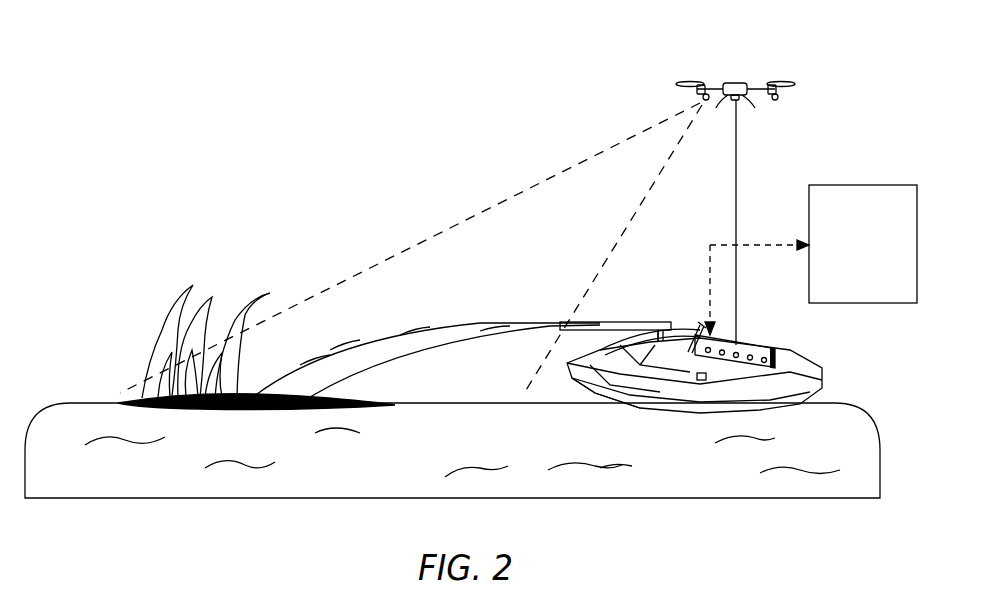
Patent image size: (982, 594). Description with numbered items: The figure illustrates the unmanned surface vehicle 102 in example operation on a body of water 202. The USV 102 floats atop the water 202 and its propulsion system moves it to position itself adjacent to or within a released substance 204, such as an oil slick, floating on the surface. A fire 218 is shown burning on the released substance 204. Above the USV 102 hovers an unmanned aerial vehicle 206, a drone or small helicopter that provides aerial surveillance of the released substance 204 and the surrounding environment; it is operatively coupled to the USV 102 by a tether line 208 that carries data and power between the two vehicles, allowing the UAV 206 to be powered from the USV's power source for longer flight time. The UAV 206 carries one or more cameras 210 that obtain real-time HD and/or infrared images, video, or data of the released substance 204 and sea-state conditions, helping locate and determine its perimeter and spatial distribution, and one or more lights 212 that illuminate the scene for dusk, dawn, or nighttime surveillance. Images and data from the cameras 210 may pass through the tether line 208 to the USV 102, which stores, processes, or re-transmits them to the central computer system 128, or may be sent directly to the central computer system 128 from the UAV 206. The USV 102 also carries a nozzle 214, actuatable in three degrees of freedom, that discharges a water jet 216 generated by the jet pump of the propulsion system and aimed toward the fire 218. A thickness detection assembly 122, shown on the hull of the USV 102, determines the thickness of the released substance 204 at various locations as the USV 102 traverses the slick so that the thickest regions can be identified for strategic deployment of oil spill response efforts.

The unmanned surface vehicle 102 is at (636, 298).
The thickness detection assembly 122 is at (585, 392).
The central computer system 128 is at (846, 297).
The body of water 202 is at (471, 460).
The released substance 204 is at (350, 397).
The unmanned aerial vehicle 206 is at (668, 58).
The tether line 208 is at (737, 178).
The camera 210 is at (703, 100).
The light 212 is at (782, 96).
The nozzle 214 is at (655, 322).
The water jet 216 is at (437, 325).
The fire 218 is at (227, 274).